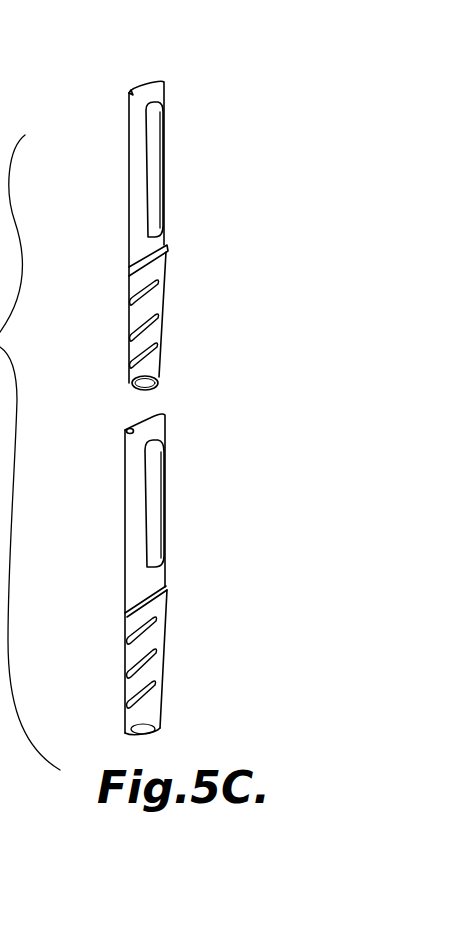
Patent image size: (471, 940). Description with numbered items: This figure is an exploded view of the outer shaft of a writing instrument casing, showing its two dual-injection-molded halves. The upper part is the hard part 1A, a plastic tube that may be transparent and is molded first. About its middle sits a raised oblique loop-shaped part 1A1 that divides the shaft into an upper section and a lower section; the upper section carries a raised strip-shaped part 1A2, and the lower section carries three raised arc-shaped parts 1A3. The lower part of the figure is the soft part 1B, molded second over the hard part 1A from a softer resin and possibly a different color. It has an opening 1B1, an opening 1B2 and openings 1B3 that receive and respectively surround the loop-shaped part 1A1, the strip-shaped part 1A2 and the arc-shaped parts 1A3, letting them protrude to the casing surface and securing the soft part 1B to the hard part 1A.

The hard part 1A is at (153, 235).
The raised oblique loop-shaped part 1A1 is at (128, 270).
The raised strip-shaped part 1A2 is at (157, 153).
The raised arc-shaped part 1A3 is at (128, 302).
The soft part 1B is at (158, 574).
The opening 1B1 is at (165, 586).
The opening 1B2 is at (155, 507).
The opening 1B3 is at (126, 643).